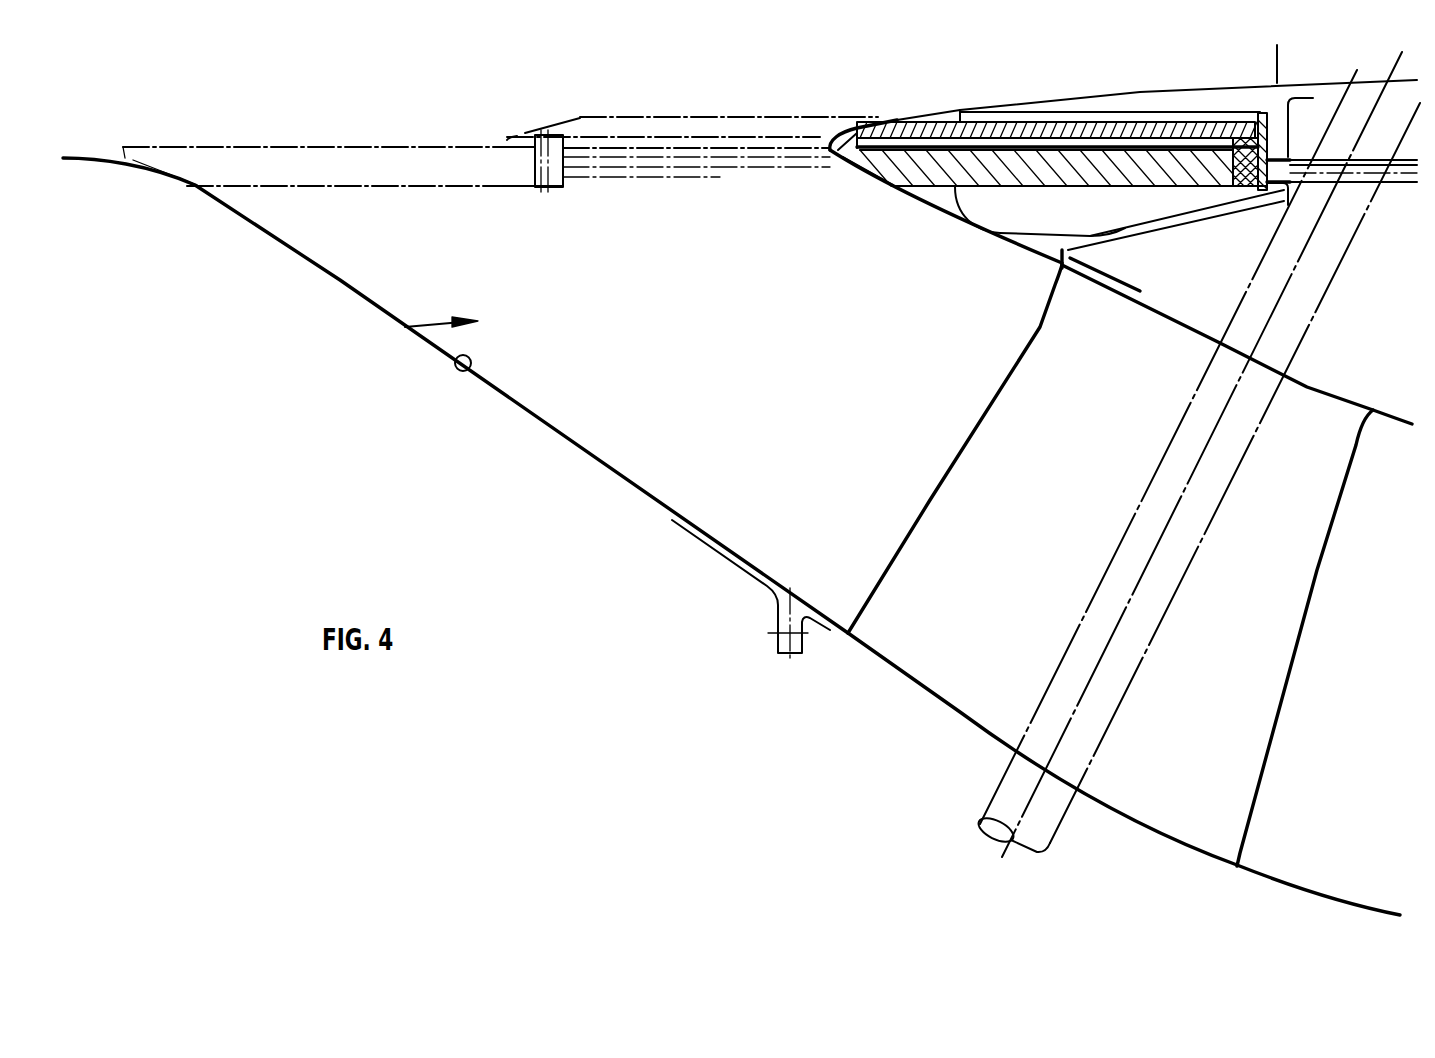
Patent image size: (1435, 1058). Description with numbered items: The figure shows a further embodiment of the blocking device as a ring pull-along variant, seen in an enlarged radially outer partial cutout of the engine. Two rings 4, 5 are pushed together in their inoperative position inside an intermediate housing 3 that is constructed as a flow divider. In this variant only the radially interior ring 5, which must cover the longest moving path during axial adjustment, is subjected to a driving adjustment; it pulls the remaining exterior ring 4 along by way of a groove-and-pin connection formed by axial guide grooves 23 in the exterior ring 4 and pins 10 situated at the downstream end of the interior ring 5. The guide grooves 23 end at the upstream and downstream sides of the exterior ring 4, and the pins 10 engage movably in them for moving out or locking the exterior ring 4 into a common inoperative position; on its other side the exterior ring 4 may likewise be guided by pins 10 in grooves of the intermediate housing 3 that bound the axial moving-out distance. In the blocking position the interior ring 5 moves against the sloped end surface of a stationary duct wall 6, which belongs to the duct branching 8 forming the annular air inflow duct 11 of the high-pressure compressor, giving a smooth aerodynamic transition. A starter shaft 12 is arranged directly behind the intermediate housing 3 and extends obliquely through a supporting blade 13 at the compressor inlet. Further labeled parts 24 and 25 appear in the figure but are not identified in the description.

The intermediate housing 3 is at (1098, 105).
The radially exterior ring 4 is at (897, 115).
The radially interior ring 5 is at (455, 188).
The duct wall 6 is at (466, 362).
The duct branching 8 is at (405, 327).
The pins 10 is at (1222, 188).
The annular air inflow duct 11 is at (773, 411).
The shaft 12 is at (1137, 618).
The supporting blade 13 is at (938, 658).
The axial guide grooves 23 is at (918, 192).
The end plate 24 is at (1257, 120).
The insulating layer 25 is at (1127, 118).